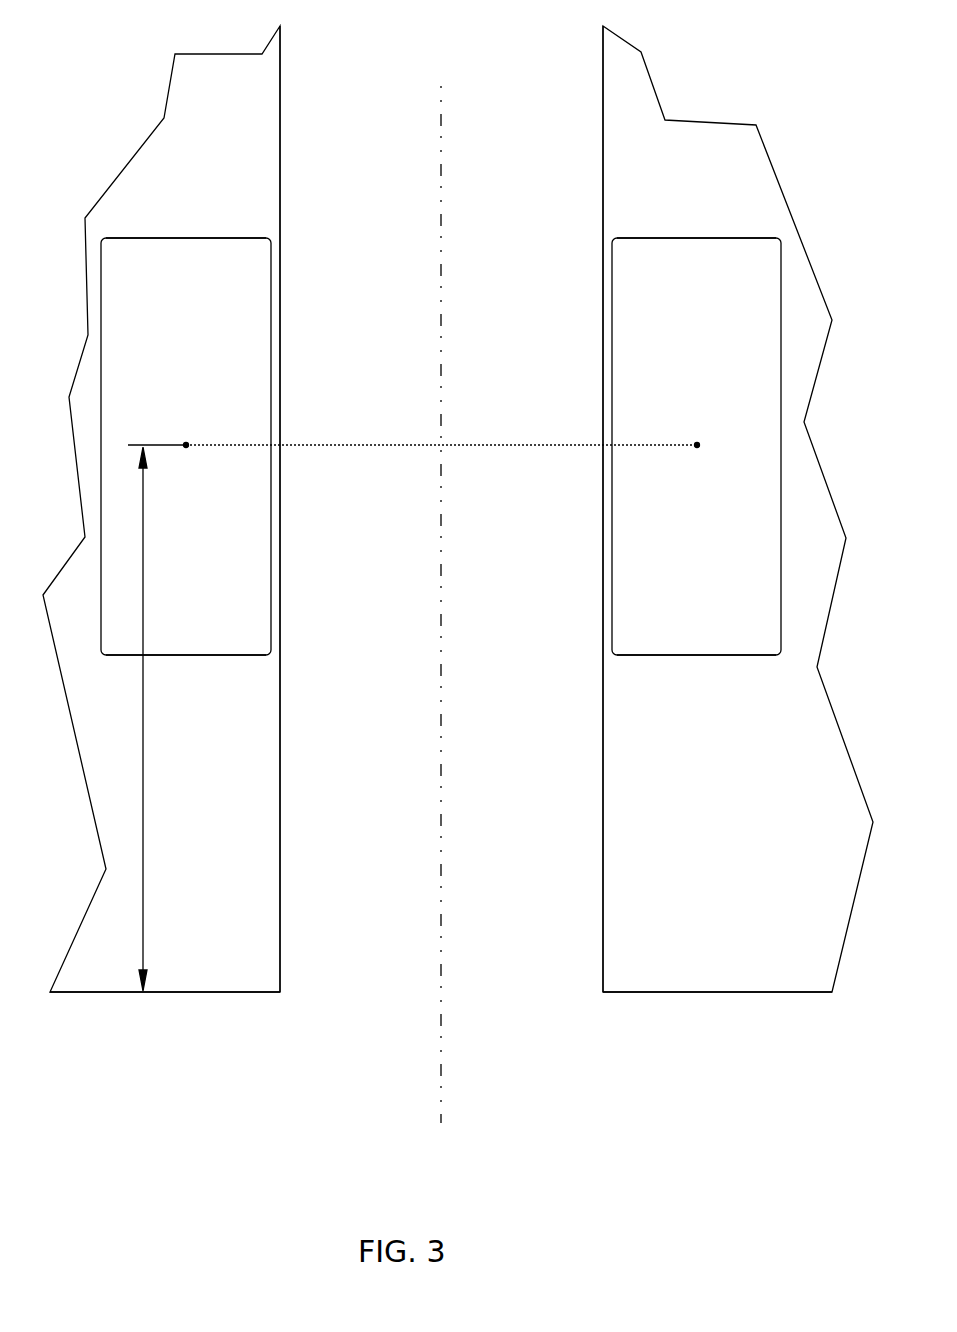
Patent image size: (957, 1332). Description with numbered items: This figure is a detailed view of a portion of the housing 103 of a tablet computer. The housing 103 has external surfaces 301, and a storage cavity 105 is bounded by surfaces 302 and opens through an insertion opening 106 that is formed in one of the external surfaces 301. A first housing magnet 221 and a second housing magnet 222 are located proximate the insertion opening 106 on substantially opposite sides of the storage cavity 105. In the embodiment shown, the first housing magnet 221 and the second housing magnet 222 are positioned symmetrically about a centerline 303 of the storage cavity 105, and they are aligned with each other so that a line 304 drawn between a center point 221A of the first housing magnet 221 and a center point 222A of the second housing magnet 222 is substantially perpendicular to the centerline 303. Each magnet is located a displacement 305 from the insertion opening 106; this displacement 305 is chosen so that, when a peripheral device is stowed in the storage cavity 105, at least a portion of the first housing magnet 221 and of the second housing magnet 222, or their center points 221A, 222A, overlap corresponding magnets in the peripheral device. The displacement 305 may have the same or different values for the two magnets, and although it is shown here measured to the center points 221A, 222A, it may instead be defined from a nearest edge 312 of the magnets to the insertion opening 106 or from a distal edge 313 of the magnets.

The housing 103 is at (761, 78).
The storage cavity 105 is at (388, 337).
The insertion opening 106 is at (522, 1022).
The first housing magnet 221 is at (205, 417).
The center point of first housing magnet 221A is at (184, 450).
The second housing magnet 222 is at (712, 417).
The center point of second housing magnet 222A is at (695, 450).
The external surfaces 301 is at (193, 993).
The surfaces 302 is at (280, 78).
The centerline 303 is at (441, 1066).
The line 304 is at (400, 447).
The displacement 305 is at (143, 758).
The nearest edge 312 is at (163, 655).
The distal edge 313 is at (145, 238).